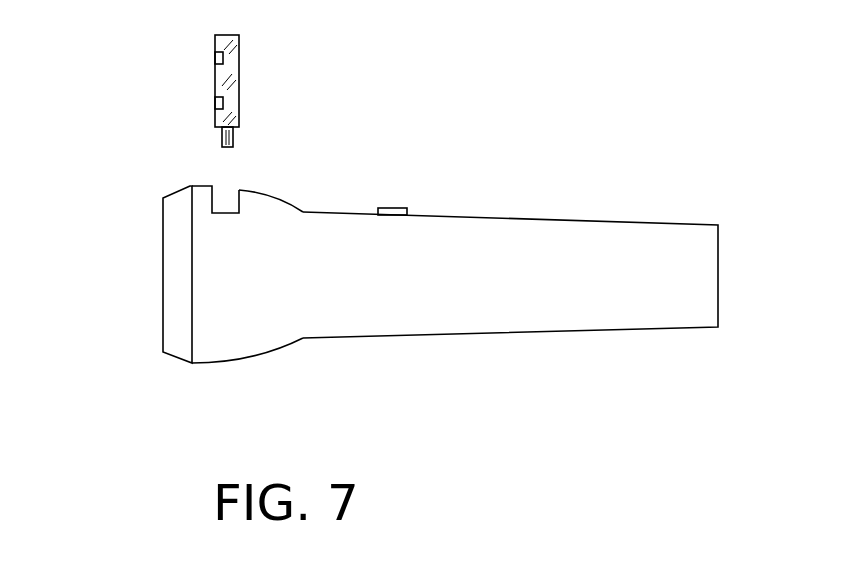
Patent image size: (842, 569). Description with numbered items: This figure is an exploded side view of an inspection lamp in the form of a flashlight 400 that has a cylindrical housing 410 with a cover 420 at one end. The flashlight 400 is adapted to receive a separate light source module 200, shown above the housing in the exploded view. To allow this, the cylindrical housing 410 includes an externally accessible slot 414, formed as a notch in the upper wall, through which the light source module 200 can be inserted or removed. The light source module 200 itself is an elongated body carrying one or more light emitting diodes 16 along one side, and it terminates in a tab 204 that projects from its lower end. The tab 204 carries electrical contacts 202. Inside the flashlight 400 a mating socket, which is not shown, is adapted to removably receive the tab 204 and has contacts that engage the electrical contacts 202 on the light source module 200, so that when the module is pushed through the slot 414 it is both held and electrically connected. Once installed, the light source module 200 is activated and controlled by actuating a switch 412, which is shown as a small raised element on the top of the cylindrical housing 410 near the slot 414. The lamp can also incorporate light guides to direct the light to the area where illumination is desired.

The light emitting diodes 16 is at (216, 57).
The light source module 200 is at (232, 57).
The electrical contacts 202 is at (233, 138).
The tab 204 is at (222, 140).
The flashlight 400 is at (400, 360).
The cylindrical housing 410 is at (557, 232).
The switch 412 is at (393, 208).
The slot 414 is at (223, 193).
The cover 420 is at (178, 348).